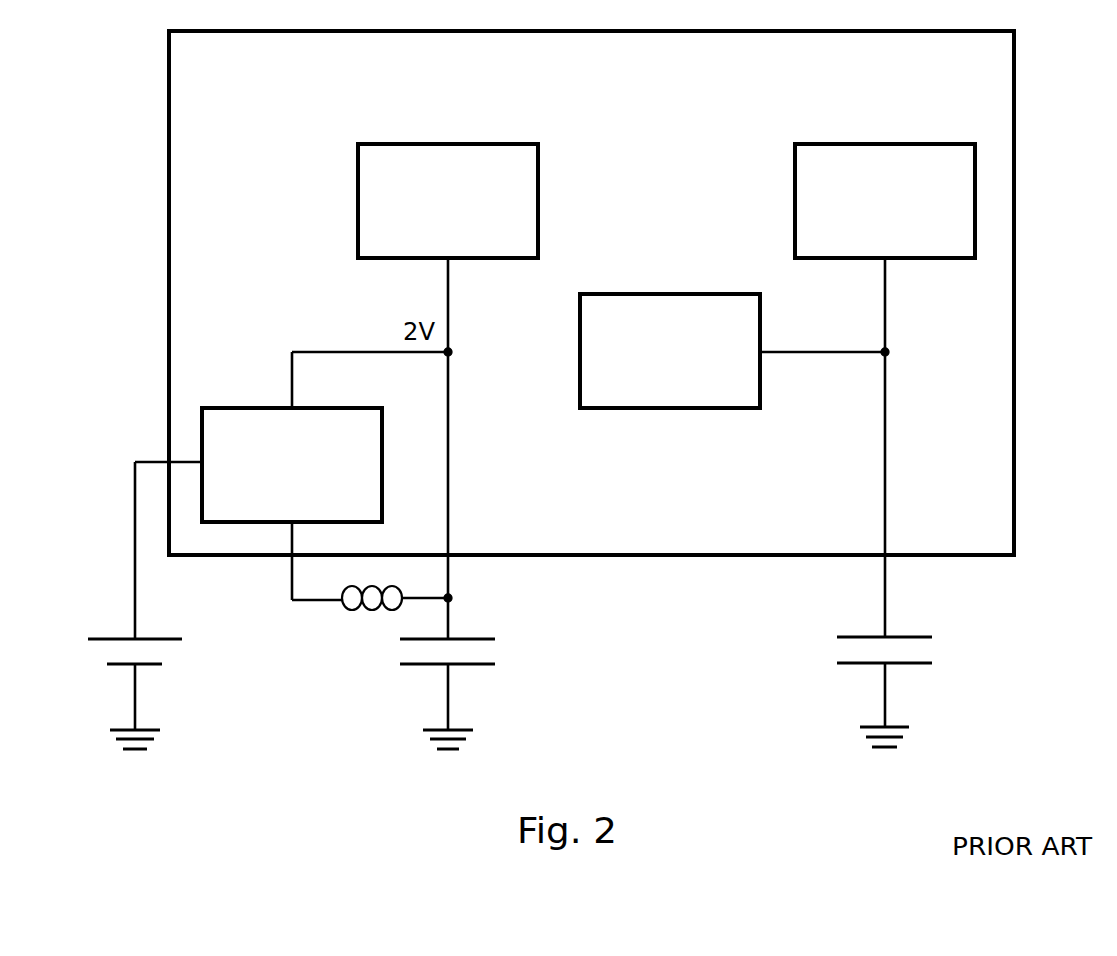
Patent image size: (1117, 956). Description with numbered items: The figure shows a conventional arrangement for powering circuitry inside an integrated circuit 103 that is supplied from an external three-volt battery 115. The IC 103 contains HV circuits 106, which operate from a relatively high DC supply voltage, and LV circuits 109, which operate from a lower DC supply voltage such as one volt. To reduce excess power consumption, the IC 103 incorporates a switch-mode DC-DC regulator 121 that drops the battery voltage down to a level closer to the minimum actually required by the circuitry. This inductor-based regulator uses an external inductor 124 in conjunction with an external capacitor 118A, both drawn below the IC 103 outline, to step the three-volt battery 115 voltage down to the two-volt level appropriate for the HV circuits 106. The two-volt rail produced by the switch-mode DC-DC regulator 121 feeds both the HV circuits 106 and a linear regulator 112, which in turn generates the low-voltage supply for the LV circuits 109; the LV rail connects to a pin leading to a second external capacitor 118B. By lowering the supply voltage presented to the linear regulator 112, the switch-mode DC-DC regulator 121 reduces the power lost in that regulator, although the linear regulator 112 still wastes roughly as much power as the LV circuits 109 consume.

The integrated circuit 103 is at (665, 558).
The HV circuits 106 is at (447, 143).
The LV circuits 109 is at (885, 143).
The linear regulator 112 is at (668, 293).
The battery 115 is at (120, 665).
The capacitor 118A is at (432, 665).
The capacitor 118B is at (900, 665).
The switch-mode DC-DC regulator 121 is at (238, 407).
The inductor 124 is at (372, 612).